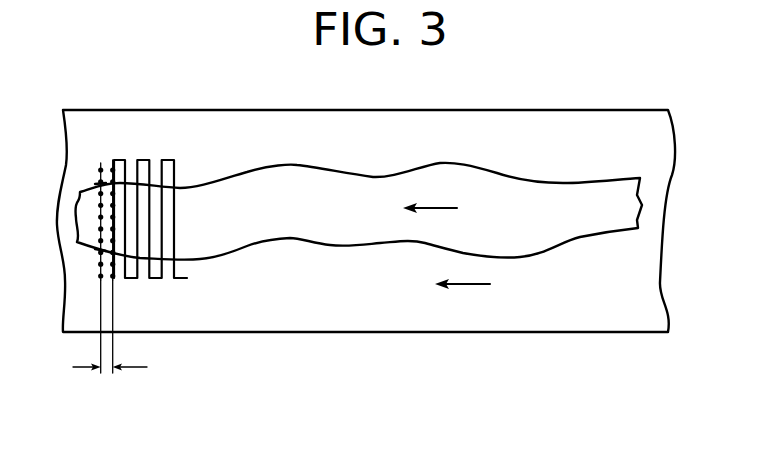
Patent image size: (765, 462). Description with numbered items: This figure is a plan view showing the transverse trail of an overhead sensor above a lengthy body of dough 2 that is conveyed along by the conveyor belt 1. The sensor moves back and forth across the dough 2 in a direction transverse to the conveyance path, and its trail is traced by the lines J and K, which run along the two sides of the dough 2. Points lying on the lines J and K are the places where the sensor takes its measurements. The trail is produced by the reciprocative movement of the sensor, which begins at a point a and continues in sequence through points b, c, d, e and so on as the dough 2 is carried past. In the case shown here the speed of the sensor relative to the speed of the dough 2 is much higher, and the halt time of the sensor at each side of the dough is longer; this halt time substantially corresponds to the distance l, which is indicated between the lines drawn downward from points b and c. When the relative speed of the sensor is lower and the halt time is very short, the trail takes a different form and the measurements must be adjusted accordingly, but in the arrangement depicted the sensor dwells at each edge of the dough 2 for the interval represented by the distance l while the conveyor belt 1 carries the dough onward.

The conveyor belt 1 is at (378, 307).
The dough 2 is at (310, 218).
The point a is at (100, 163).
The point d is at (113, 160).
The point e is at (125, 160).
The line J is at (100, 210).
The line K is at (100, 237).
The point b is at (100, 282).
The point c is at (113, 282).
The distance l is at (107, 372).